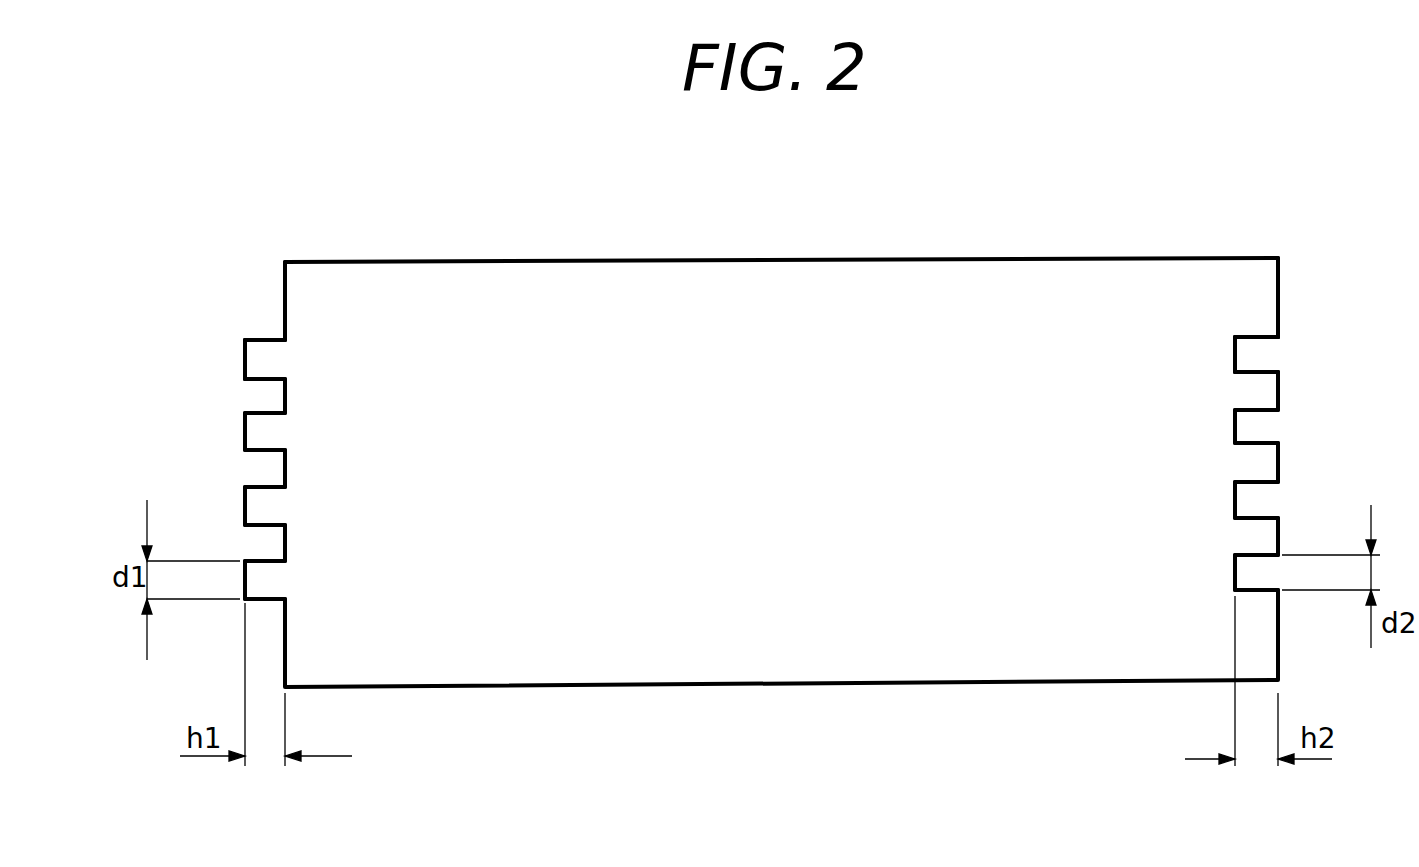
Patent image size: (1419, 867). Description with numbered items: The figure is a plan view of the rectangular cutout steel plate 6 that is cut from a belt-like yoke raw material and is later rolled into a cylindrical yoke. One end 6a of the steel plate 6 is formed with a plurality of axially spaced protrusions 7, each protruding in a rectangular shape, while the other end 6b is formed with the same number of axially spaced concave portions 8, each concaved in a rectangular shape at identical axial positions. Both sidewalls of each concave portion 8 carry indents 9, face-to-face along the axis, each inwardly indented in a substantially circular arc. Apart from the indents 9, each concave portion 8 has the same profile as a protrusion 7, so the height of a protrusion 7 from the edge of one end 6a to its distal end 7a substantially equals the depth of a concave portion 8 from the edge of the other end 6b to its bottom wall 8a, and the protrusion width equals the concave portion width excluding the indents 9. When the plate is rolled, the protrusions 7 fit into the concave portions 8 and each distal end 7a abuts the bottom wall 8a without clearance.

The cutout steel plate 6 is at (777, 259).
The one end 6a is at (302, 296).
The other end 6b is at (1245, 278).
The protrusions 7 is at (261, 353).
The distal end 7a is at (245, 358).
The concave portions 8 is at (1250, 357).
The bottom wall 8a is at (1232, 352).
The indents 9 is at (1255, 333).